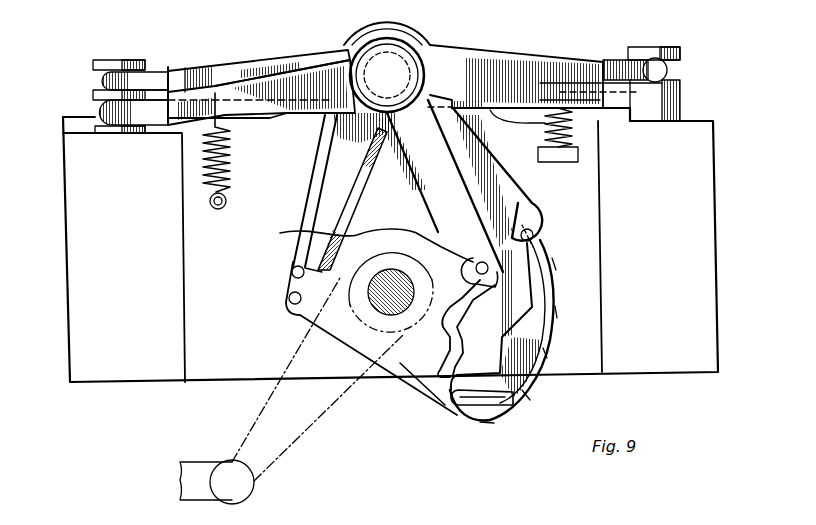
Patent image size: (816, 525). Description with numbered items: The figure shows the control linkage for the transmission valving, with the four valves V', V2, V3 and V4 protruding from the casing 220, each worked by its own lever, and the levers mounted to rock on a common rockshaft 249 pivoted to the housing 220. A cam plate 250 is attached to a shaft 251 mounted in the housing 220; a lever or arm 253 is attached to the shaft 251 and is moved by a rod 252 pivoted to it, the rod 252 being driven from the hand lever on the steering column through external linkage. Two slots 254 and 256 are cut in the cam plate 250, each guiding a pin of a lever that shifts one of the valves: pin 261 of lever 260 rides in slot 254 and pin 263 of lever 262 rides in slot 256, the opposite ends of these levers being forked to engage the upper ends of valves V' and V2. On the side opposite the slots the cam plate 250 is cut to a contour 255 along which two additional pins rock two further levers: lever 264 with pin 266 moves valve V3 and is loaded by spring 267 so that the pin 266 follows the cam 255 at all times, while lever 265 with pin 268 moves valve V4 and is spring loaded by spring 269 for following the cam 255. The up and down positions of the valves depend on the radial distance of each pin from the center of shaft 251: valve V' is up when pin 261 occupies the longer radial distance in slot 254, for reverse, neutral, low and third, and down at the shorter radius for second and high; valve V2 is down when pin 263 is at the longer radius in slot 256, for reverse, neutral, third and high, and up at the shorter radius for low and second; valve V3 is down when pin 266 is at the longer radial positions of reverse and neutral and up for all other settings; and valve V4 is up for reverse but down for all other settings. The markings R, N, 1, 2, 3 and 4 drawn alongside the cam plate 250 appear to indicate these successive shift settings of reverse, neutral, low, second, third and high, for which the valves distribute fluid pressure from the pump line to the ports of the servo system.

The casing 220 is at (710, 118).
The valve V⁴ V4 is at (97, 60).
The valve V² V2 is at (93, 93).
The valve V¹ V' is at (654, 37).
The valve V³ V3 is at (680, 78).
The rockshaft 249 is at (395, 62).
The cam plate 250 is at (540, 373).
The shaft 251 is at (391, 312).
The rod 252 is at (205, 462).
The arm 253 is at (273, 384).
The slot 254 is at (456, 397).
The cam contour 255 is at (300, 246).
The slot 256 is at (433, 384).
The lever 260 is at (481, 58).
The pin 261 is at (528, 210).
The lever 262 is at (476, 153).
The pin 263 is at (488, 270).
The lever 264 is at (583, 93).
The lever 265 is at (262, 50).
The pin 266 is at (288, 300).
The spring 267 is at (541, 93).
The pin 268 is at (291, 272).
The spring 269 is at (232, 140).
The jaw surface N is at (557, 265).
The radius R is at (535, 227).
The jaw position 1 is at (558, 313).
The jaw position 2 is at (547, 355).
The jaw position 3 is at (527, 397).
The jaw position 4 is at (490, 427).